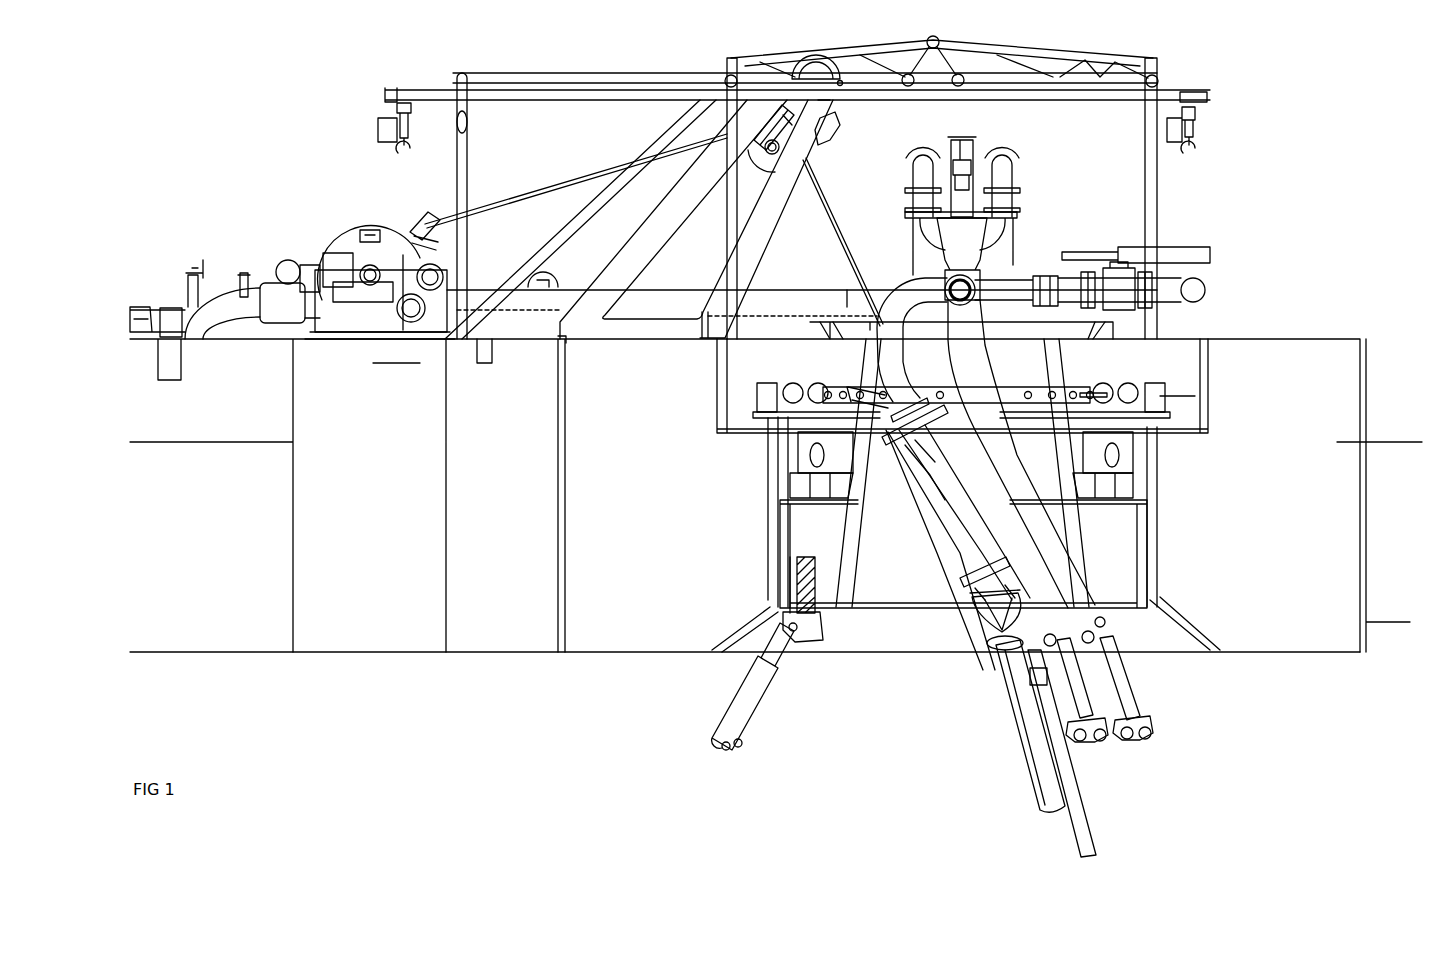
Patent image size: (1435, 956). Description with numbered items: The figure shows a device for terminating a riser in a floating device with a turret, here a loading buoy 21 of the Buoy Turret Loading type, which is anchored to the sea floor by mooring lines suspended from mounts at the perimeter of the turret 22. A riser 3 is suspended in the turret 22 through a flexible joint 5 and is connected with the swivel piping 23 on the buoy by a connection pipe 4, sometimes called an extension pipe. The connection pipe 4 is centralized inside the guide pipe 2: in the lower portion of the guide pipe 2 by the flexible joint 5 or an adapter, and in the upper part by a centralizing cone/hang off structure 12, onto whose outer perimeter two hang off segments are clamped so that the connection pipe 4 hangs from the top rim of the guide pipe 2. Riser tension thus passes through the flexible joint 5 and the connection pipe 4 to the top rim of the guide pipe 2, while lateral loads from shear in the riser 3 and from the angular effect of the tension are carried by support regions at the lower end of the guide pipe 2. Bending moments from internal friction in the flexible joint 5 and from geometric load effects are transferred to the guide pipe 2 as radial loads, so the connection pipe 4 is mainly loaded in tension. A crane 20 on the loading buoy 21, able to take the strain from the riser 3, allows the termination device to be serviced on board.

The guide pipe 2 is at (917, 512).
The riser 3 is at (1067, 782).
The connection pipe 4 is at (947, 452).
The flexible joint 5 is at (1030, 605).
The centralizing cone/hang off structure 12 is at (973, 438).
The crane 20 is at (782, 128).
The loading buoy 21 is at (620, 655).
The turret 22 is at (915, 610).
The swivel piping 23 is at (1055, 306).